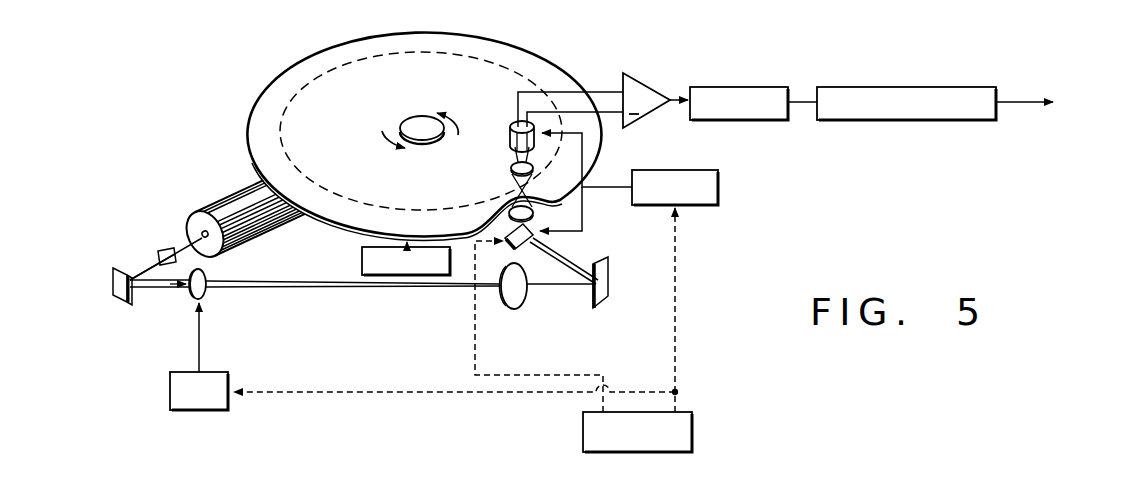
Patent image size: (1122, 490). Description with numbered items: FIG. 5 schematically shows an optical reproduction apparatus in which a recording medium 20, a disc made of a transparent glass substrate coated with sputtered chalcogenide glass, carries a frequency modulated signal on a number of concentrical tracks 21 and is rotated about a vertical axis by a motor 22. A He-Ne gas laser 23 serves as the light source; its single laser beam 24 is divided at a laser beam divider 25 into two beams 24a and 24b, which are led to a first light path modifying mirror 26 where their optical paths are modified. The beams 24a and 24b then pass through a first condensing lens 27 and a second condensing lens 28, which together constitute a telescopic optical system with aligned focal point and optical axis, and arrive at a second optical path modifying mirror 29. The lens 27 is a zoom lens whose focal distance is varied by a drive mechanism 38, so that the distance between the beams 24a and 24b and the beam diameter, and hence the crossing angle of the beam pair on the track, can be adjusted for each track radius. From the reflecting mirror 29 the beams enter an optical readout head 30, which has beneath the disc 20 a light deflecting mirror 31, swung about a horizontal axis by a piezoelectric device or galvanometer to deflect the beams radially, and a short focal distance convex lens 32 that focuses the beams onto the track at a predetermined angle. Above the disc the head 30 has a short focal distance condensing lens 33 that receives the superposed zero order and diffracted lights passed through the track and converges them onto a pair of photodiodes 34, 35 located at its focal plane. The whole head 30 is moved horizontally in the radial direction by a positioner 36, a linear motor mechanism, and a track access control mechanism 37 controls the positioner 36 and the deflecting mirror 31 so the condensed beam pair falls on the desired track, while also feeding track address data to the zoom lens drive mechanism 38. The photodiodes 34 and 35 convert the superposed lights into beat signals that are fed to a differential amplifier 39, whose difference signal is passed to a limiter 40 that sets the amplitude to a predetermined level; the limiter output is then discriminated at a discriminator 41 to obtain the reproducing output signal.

The recording medium 20 is at (283, 72).
The concentrical tracks 21 is at (290, 101).
The motor 22 is at (362, 260).
The He-Ne gas laser 23 is at (220, 206).
The laser beam 24 is at (180, 248).
The laser beam 24a is at (140, 268).
The laser beam 24b is at (148, 288).
The laser beam divider 25 is at (160, 254).
The first light path modifying mirror 26 is at (112, 287).
The first condensing lens 27 is at (206, 294).
The second condensing lens 28 is at (513, 309).
The second optical path modifying mirror 29 is at (601, 308).
The optical readout head 30 is at (583, 216).
The light deflecting mirror 31 is at (508, 229).
The short focal distance convex lens 32 is at (533, 198).
The short focal distance condensing lens 33 is at (511, 168).
The photodiode 34 is at (511, 134).
The photodiode 35 is at (549, 103).
The positioner 36 is at (720, 188).
The track access control mechanism 37 is at (694, 432).
The zoom lens drive mechanism 38 is at (195, 411).
The differential amplifier 39 is at (651, 82).
The limiter 40 is at (736, 87).
The discriminator 41 is at (899, 87).